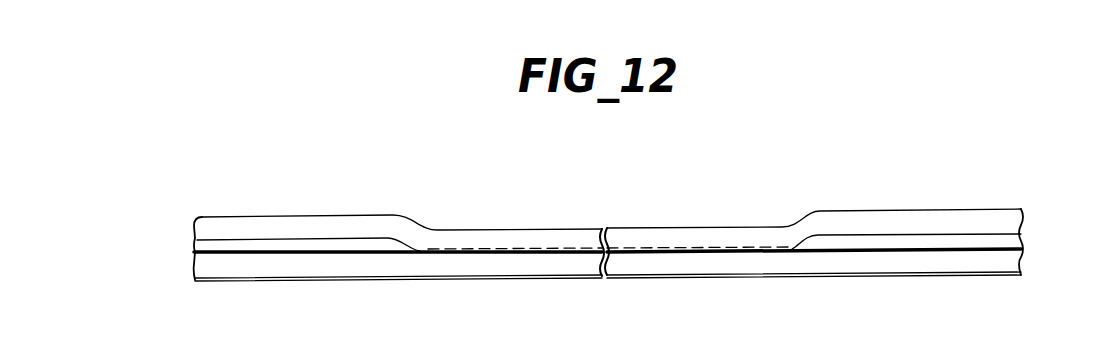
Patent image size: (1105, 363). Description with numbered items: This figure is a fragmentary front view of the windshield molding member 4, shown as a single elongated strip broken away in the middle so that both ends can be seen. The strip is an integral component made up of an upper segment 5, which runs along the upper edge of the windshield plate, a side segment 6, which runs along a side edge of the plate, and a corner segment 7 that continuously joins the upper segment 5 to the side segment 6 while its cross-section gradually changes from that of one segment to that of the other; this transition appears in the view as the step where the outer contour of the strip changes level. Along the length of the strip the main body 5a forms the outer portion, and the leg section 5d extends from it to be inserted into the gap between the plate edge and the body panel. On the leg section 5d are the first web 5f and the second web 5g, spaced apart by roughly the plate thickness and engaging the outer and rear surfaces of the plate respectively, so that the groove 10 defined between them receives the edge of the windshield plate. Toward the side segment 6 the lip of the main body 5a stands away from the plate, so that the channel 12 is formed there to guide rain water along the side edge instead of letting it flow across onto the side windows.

The windshield molding member 4 is at (859, 211).
The upper segment 5 is at (558, 227).
The main body 5a is at (222, 230).
The leg section 5d is at (193, 272).
The first web 5f is at (195, 257).
The second web 5g is at (270, 283).
The side segment 6 is at (358, 212).
The corner segment 7 is at (420, 223).
The groove 10 is at (564, 310).
The channel 12 is at (197, 247).